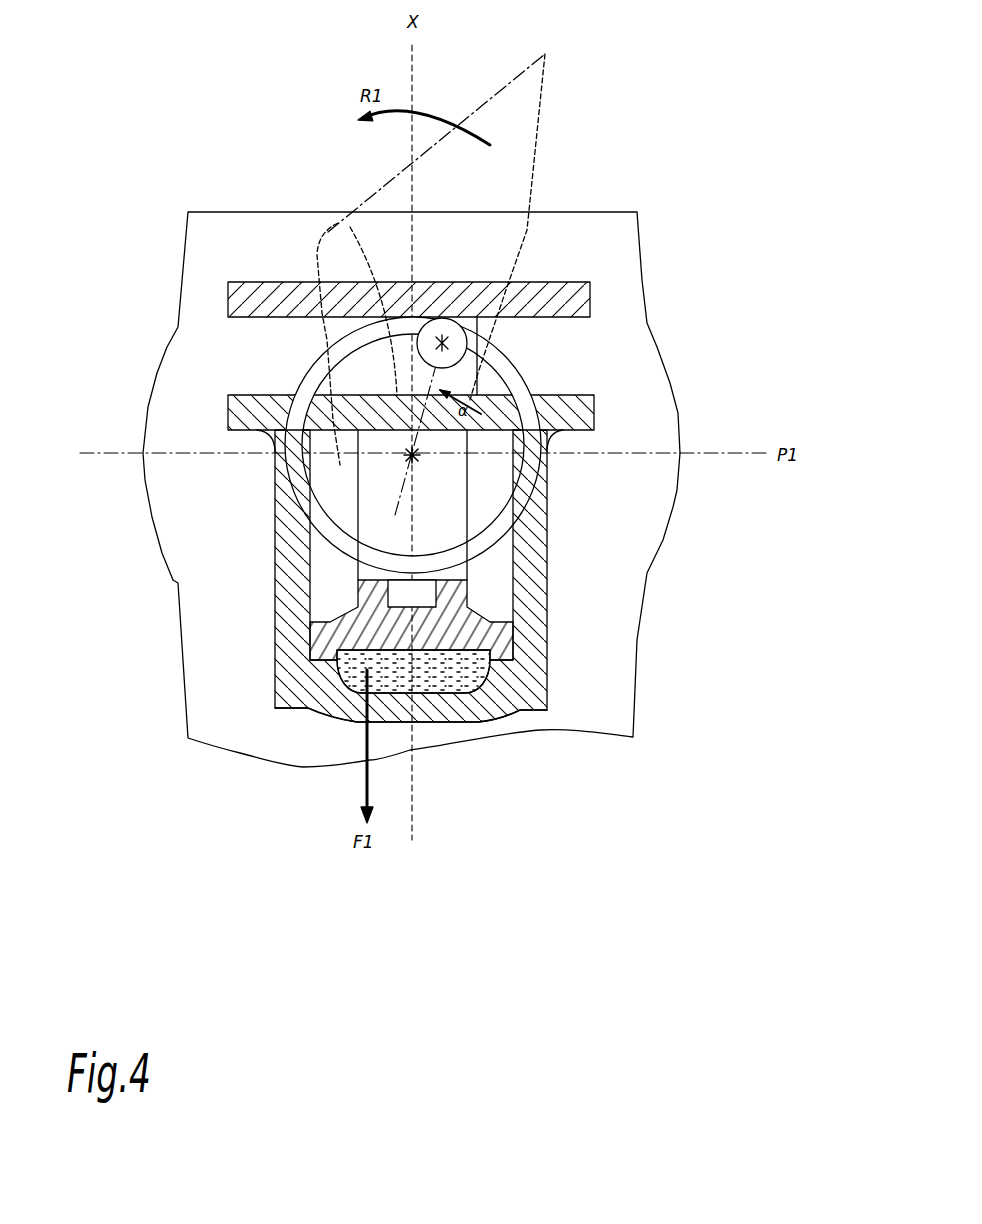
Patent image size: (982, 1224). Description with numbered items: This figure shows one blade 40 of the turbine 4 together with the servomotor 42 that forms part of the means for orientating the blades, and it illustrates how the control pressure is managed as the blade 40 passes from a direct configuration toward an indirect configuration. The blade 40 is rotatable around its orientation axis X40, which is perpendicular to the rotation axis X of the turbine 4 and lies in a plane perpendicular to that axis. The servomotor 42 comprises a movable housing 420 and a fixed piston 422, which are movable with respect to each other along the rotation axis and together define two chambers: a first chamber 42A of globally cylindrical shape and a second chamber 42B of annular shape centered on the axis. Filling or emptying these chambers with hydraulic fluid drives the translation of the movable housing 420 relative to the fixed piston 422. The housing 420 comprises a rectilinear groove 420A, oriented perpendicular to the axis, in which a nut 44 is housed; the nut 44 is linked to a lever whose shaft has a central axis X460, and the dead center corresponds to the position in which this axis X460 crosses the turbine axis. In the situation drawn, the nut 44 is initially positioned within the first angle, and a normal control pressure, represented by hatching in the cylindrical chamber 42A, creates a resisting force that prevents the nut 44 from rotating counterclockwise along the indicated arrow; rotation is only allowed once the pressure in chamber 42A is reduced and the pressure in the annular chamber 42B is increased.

The turbine 4 is at (712, 268).
The blade 40 is at (527, 108).
The nut 44 is at (468, 377).
The servomotor 42 is at (553, 636).
The first chamber 42A is at (488, 718).
The second chamber 42B is at (493, 593).
The movable housing 420 is at (547, 601).
The fixed piston 422 is at (547, 663).
The rectilinear groove 420A is at (238, 321).
The central axis of the shaft X460 is at (438, 318).
The orientation axis X40 is at (417, 460).